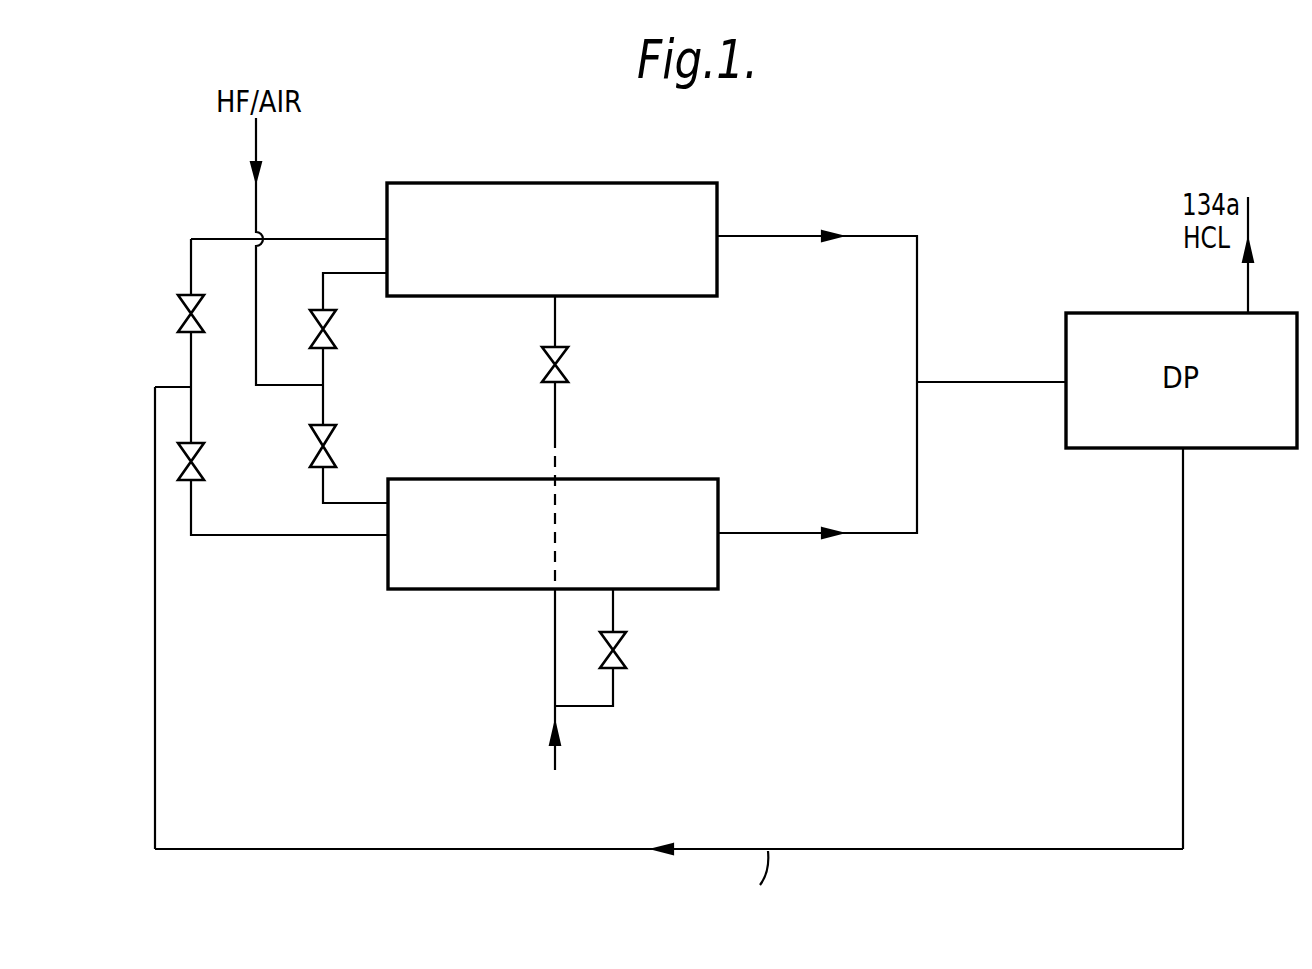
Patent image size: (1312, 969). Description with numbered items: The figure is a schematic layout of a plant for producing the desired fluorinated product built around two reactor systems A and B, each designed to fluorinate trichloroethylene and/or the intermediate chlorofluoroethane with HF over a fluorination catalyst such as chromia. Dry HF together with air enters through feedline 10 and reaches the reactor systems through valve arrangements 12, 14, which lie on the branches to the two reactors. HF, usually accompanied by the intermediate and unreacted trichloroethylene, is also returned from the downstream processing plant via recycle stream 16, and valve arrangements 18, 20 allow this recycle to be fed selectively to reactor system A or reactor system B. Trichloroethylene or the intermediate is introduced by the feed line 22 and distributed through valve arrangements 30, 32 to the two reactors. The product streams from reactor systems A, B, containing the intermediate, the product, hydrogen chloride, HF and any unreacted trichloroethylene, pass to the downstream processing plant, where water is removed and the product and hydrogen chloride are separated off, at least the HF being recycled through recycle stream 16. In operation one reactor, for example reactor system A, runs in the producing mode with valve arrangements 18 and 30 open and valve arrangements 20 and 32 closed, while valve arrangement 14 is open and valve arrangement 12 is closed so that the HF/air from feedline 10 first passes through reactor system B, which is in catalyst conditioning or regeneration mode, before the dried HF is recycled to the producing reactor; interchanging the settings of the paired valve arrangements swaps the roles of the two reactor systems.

The feedline 10 is at (255, 199).
The valve arrangement 12 is at (332, 435).
The valve arrangement 14 is at (330, 328).
The recycle stream 16 is at (751, 849).
The valve arrangement 18 is at (203, 472).
The valve arrangement 20 is at (178, 304).
The trichloroethylene/133a feed line 22 is at (554, 753).
The valve arrangement 30 is at (627, 655).
The valve arrangement 32 is at (568, 373).
The reactor system A is at (610, 479).
The reactor system B is at (649, 183).